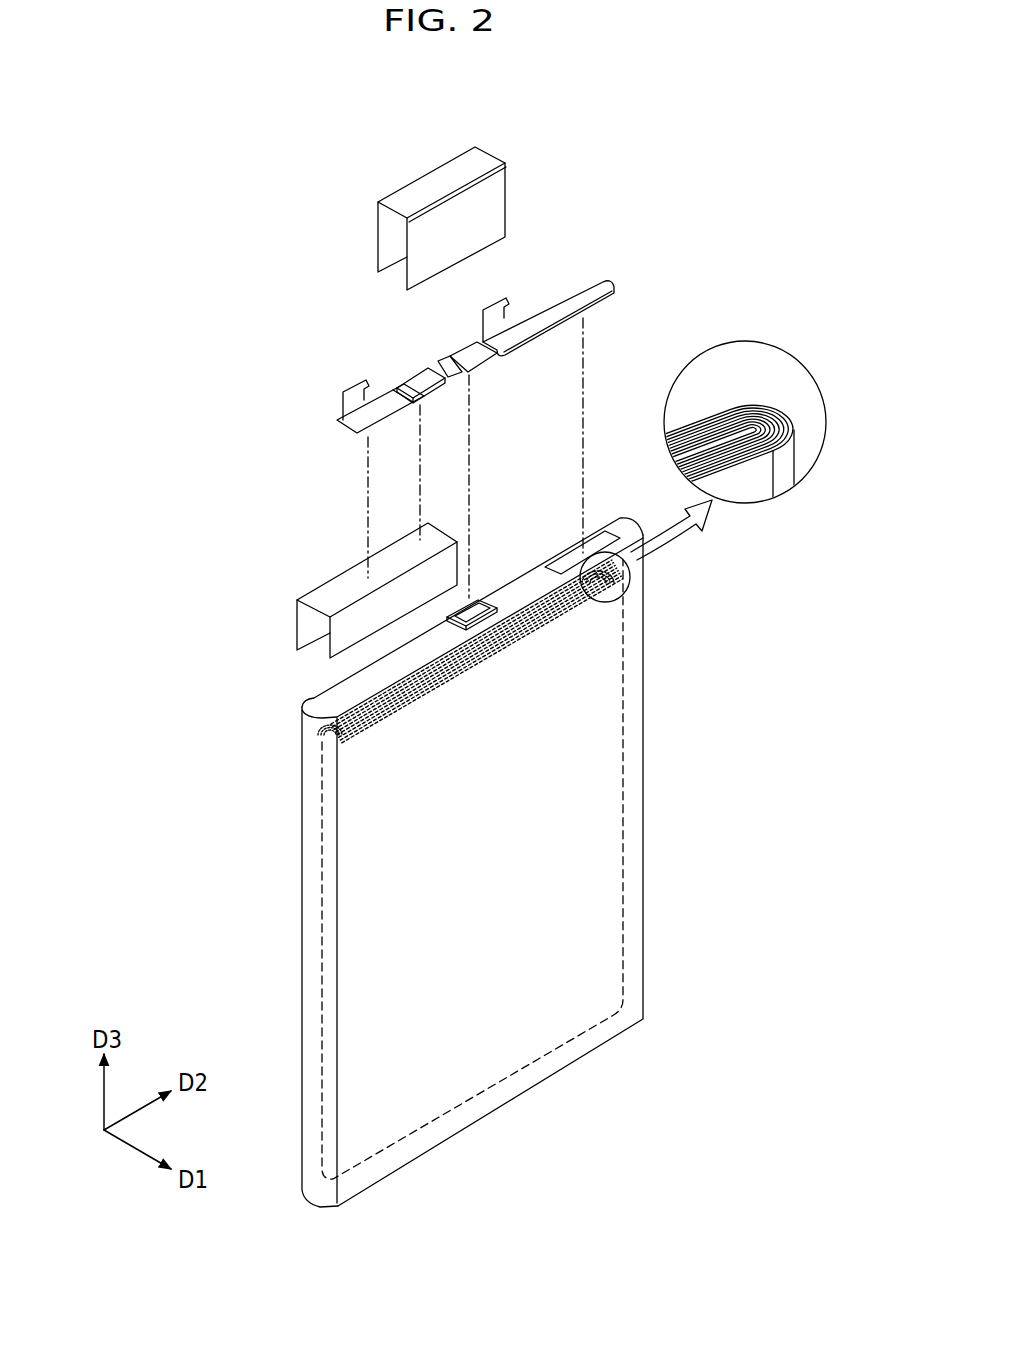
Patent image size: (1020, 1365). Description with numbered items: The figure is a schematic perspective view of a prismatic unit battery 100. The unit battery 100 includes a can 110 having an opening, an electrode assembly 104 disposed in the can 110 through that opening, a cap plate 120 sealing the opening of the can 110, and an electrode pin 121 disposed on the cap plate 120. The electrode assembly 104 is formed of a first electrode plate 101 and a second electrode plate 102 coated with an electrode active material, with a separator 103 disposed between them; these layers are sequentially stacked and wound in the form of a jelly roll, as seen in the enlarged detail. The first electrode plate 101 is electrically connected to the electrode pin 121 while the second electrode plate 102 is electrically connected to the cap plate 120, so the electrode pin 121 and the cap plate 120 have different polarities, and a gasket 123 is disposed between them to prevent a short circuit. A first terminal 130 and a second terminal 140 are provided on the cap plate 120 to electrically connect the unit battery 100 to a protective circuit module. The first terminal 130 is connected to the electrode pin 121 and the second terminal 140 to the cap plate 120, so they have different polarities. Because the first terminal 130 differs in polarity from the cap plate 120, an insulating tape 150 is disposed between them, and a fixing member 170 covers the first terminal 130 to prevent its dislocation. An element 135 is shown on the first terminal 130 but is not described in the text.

The unit battery 100 is at (257, 203).
The first electrode plate 101 is at (748, 402).
The second electrode plate 102 is at (707, 412).
The separator 103 is at (724, 404).
The electrode assembly 104 is at (627, 740).
The can 110 is at (298, 893).
The cap plate 120 is at (318, 699).
The electrode pin 121 is at (472, 604).
The gasket 123 is at (490, 602).
The first terminal 130 is at (330, 412).
The protection circuit element 135 is at (414, 378).
The second terminal 140 is at (579, 280).
The insulating tape 150 is at (295, 600).
The fixing member 170 is at (428, 187).